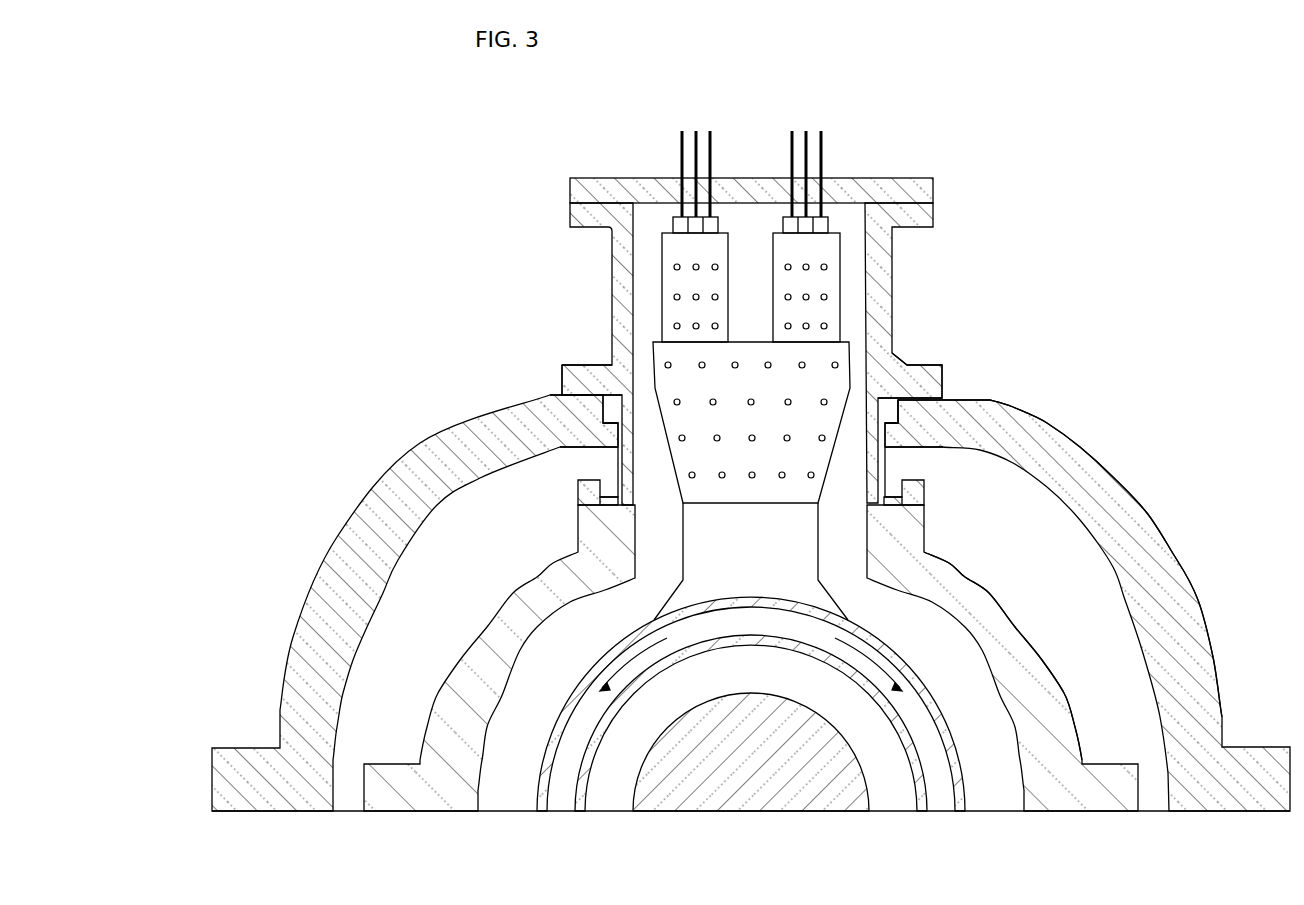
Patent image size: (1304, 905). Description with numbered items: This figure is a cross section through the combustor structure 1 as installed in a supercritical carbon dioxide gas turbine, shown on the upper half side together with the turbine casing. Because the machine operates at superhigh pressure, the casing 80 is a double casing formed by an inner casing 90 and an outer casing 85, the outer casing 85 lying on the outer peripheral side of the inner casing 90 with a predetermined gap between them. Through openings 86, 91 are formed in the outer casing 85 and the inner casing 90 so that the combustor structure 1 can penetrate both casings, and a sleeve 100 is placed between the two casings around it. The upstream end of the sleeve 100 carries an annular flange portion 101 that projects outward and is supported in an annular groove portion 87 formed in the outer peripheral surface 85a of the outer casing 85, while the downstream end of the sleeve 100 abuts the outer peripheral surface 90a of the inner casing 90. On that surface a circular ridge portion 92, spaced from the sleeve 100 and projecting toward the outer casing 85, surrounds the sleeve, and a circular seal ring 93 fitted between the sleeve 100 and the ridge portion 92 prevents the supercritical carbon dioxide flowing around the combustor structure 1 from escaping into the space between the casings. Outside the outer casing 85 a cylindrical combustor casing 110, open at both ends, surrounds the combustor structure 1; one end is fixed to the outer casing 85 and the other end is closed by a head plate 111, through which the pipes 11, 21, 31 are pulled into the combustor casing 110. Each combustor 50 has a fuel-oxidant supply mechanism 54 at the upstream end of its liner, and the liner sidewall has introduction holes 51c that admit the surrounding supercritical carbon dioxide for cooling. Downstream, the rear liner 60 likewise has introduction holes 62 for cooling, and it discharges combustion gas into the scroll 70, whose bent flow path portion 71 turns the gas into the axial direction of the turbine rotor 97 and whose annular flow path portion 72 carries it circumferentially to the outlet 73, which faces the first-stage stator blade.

The combustor structure 1 is at (848, 297).
The pipes 11 is at (696, 135).
The pipes 21 is at (711, 140).
The pipes 31 is at (681, 137).
The combustor 50 is at (662, 262).
The introduction holes 51c is at (718, 300).
The fuel-oxidant supply mechanism 54 is at (726, 226).
The rear liner 60 is at (830, 455).
The introduction holes 62 is at (698, 440).
The scroll 70 is at (856, 617).
The bent flow path portion 71 is at (795, 553).
The annular flow path portion 72 is at (930, 690).
The outlet 73 is at (915, 760).
The casing 80 is at (445, 358).
The outer casing 85 is at (363, 550).
The outer peripheral surface 85a is at (1012, 400).
The through opening 86 is at (652, 430).
The annular groove portion 87 is at (892, 424).
The inner casing 90 is at (512, 620).
The outer peripheral surface 90a is at (962, 570).
The through opening 91 is at (650, 550).
The ridge portion 92 is at (592, 488).
The seal ring 93 is at (618, 460).
The turbine rotor 97 is at (754, 768).
The sleeve 100 is at (568, 445).
The flange portion 101 is at (900, 418).
The combustor casing 110 is at (627, 293).
The head plate 111 is at (933, 190).